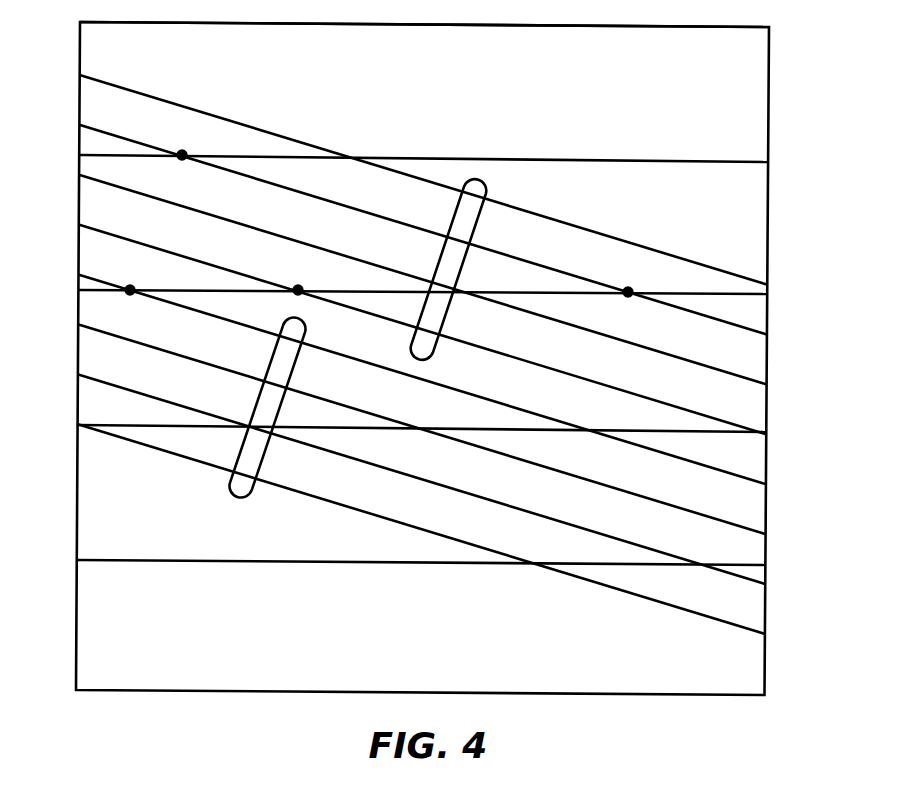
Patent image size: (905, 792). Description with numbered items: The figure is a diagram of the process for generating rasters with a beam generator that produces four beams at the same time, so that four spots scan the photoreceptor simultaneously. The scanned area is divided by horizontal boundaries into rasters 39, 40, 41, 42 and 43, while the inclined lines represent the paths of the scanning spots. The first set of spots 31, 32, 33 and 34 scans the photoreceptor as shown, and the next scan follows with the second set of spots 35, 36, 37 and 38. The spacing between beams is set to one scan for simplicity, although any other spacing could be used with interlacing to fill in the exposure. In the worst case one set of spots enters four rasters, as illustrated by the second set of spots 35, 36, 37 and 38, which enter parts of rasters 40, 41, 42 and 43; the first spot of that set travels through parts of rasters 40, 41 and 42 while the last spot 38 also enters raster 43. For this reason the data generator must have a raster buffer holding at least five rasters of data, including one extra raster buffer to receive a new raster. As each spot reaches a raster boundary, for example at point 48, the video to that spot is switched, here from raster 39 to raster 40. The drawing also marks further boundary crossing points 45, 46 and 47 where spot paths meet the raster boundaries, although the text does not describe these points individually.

The spot 31 is at (257, 130).
The spot 32 is at (327, 200).
The spot 33 is at (312, 250).
The spot 34 is at (475, 351).
The spot 35 is at (455, 392).
The spot 36 is at (600, 487).
The spot 37 is at (483, 500).
The spot 38 is at (373, 518).
The raster 39 is at (745, 94).
The raster 40 is at (745, 207).
The raster 41 is at (745, 360).
The raster 42 is at (745, 463).
The raster 43 is at (743, 666).
The connection point 45 is at (298, 286).
The connection point 46 is at (130, 286).
The connection point 47 is at (628, 288).
The point 48 is at (182, 151).